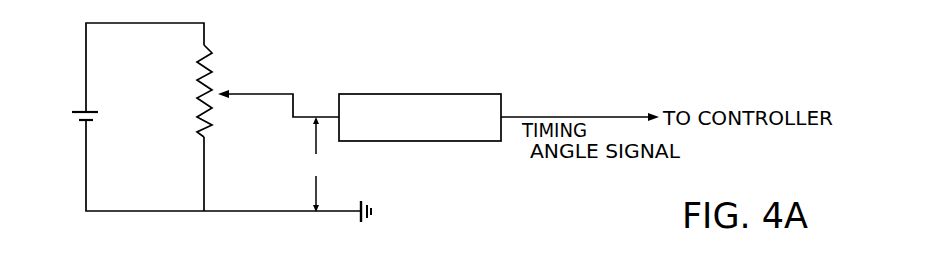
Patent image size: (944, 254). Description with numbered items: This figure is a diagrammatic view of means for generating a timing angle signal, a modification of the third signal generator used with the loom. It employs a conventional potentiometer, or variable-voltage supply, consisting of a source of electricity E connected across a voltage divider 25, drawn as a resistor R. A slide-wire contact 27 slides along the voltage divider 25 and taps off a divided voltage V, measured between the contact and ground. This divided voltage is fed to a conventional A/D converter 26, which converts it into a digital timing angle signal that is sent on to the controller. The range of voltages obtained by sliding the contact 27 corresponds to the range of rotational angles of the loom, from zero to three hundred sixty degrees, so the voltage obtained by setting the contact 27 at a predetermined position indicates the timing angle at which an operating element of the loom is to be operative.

The voltage divider 25 is at (170, 62).
The A/D converter 26 is at (408, 94).
The slide-wire contact 27 is at (258, 94).